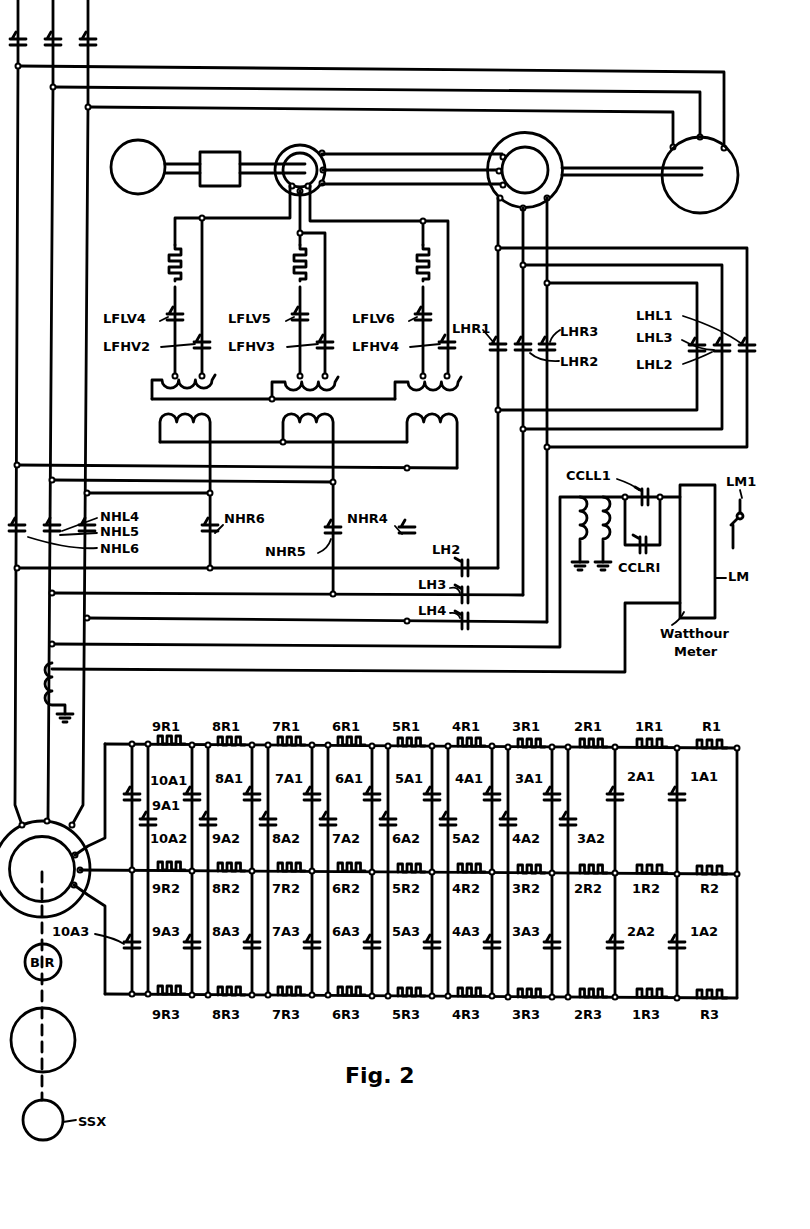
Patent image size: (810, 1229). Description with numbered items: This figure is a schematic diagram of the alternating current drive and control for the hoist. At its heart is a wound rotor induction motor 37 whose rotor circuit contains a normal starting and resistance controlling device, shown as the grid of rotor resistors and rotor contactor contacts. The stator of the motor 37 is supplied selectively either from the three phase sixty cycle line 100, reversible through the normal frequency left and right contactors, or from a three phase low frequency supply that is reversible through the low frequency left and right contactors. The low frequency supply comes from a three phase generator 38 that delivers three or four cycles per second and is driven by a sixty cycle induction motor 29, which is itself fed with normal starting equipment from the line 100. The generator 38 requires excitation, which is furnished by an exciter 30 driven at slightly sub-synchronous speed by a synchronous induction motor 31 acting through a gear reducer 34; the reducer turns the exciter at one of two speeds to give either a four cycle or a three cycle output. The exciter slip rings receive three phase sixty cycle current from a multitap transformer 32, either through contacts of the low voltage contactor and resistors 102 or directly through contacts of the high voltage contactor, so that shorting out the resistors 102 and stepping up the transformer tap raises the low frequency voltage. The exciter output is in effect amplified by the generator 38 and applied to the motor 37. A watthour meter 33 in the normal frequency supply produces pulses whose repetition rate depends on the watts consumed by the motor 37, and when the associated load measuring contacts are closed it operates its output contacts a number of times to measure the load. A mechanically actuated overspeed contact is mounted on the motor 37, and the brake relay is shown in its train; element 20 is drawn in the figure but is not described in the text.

The 60 cycle line 100 is at (134, 51).
The motor 31 is at (138, 167).
The gear reducer 34 is at (220, 169).
The exciter 30 is at (285, 152).
The three phase generator 38 is at (553, 148).
The induction motor 29 is at (665, 198).
The resistors 102 is at (420, 268).
The multitap transformer 32 is at (137, 422).
The watthour meter 33 is at (697, 551).
The wound rotor induction motor 37 is at (50, 869).
The drive unit 20 is at (76, 1038).